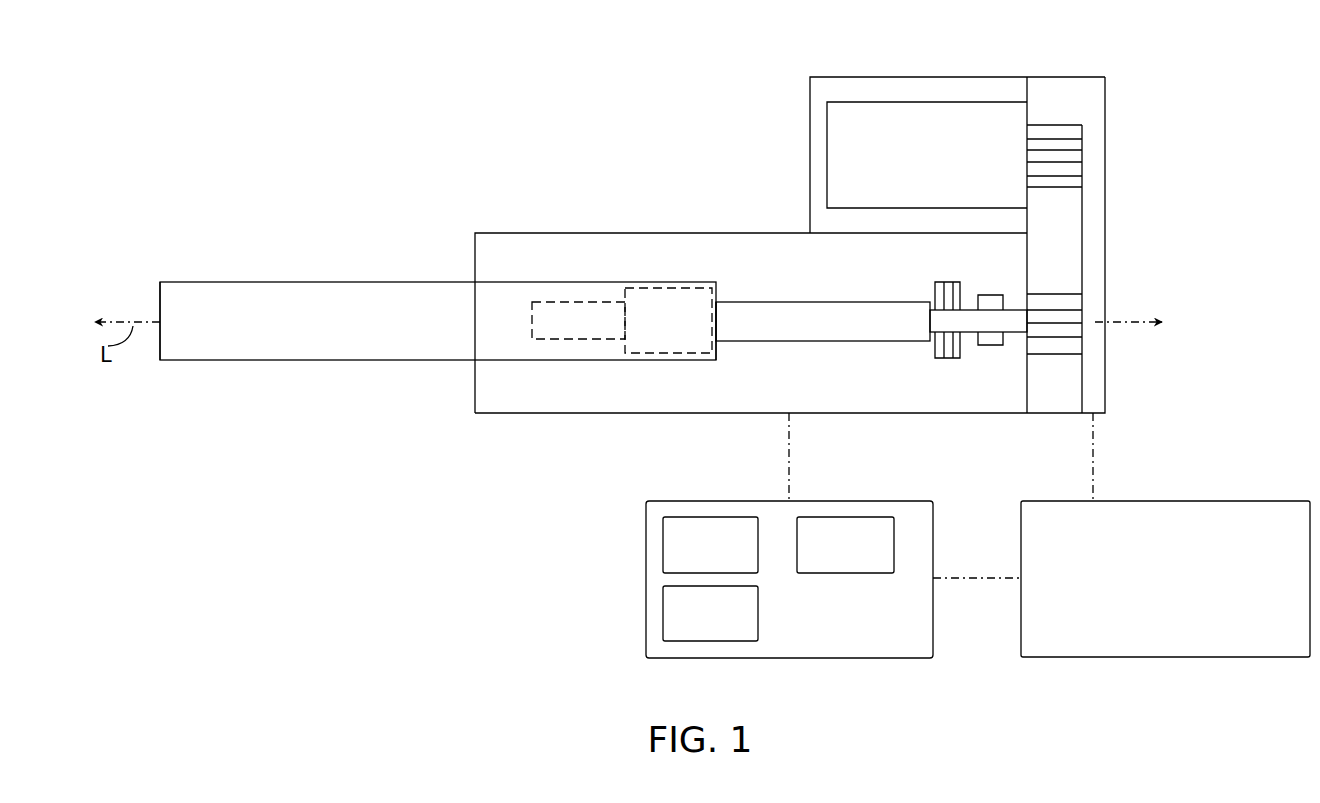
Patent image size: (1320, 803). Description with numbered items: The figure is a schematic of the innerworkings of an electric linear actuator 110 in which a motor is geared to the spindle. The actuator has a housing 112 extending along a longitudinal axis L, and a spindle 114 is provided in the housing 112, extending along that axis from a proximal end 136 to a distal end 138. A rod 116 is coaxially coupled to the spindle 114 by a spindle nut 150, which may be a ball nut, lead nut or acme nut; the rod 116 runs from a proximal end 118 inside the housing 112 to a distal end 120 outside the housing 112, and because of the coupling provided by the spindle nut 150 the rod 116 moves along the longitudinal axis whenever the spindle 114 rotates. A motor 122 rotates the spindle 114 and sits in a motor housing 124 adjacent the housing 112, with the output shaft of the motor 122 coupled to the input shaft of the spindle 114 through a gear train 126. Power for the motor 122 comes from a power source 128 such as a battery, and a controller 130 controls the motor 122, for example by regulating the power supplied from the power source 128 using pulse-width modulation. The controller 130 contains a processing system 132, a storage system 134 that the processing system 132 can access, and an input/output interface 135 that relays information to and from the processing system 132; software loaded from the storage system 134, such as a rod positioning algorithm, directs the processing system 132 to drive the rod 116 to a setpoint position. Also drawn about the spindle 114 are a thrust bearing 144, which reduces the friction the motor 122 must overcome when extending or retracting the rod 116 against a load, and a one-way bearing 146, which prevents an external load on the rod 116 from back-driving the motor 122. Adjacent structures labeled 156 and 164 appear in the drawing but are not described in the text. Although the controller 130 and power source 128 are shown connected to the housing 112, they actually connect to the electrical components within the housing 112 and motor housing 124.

The electric linear actuator 110 is at (1073, 47).
The housing 112 is at (612, 233).
The spindle 114 is at (793, 302).
The rod 116 is at (300, 360).
The proximal end 118 is at (722, 351).
The distal end 120 is at (158, 300).
The motor 122 is at (928, 102).
The motor housing 124 is at (865, 77).
The gear train 126 is at (1085, 237).
The power source 128 is at (1165, 657).
The controller 130 is at (790, 658).
The processing system 132 is at (663, 545).
The storage system 134 is at (663, 613).
The input/output (I/O) interface 135 is at (845, 517).
The proximal end 136 is at (1033, 318).
The distal end 138 is at (530, 304).
The thrust bearing 144 is at (948, 358).
The one-way bearing 146 is at (990, 345).
The spindle nut 150 is at (668, 288).
The bearing 156 is at (935, 296).
The retaining element 164 is at (958, 282).